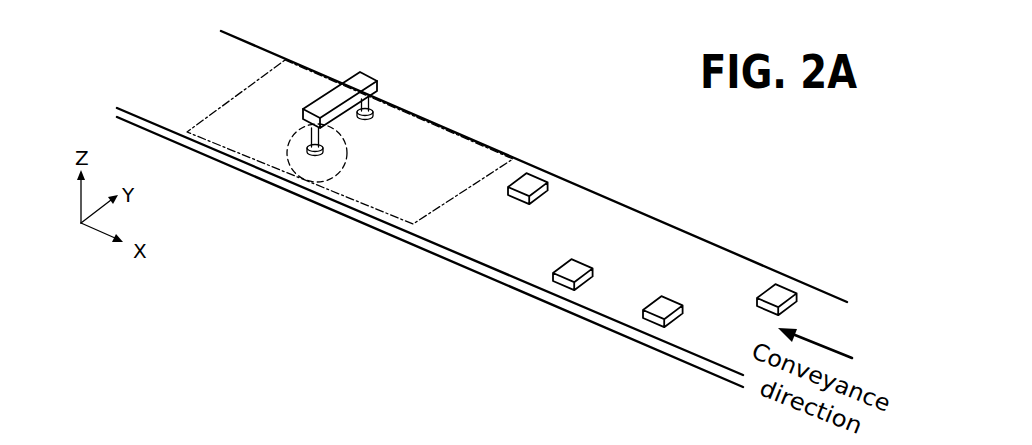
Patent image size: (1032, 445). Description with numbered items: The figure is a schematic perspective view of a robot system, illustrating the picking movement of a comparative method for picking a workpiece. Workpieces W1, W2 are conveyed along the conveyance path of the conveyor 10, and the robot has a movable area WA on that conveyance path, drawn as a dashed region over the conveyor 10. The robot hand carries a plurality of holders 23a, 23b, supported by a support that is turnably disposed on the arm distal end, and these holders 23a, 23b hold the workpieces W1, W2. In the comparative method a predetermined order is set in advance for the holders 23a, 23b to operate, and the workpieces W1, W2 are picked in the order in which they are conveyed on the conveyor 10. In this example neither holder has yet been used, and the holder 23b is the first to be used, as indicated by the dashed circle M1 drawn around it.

The conveyor 10 is at (282, 36).
The holder 23a is at (368, 105).
The holder 23b is at (311, 140).
The workpiece W1 is at (530, 185).
The workpiece W2 is at (572, 268).
The dashed circle M1 is at (342, 173).
The movable area WA is at (433, 210).